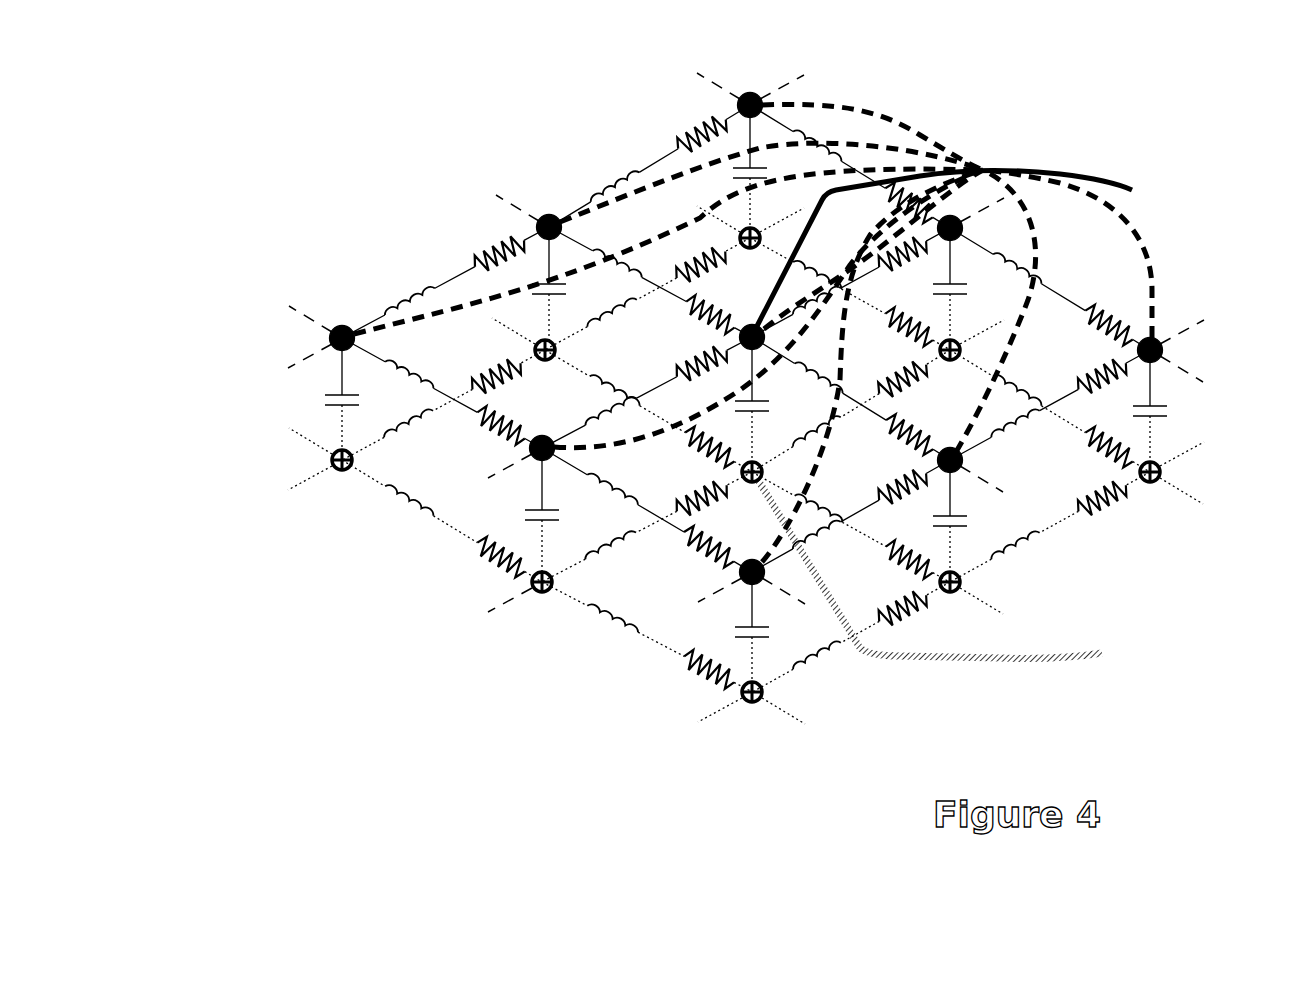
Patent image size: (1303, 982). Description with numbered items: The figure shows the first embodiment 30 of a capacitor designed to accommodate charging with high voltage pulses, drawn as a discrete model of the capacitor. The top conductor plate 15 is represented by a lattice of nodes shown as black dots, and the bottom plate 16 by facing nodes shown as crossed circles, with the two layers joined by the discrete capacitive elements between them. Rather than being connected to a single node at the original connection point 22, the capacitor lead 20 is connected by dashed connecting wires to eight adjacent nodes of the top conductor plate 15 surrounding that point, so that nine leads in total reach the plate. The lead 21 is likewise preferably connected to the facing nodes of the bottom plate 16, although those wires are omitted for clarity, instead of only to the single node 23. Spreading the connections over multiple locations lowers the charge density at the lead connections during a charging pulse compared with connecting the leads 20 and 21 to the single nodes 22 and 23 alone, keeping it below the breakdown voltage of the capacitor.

The first embodiment 30 is at (218, 125).
The top conductor plate 15 is at (275, 326).
The bottom plate 16 is at (275, 460).
The capacitor lead 20 is at (1097, 170).
The lead 21 is at (1100, 658).
The original connection point 22 is at (738, 311).
The single node 23 is at (738, 487).